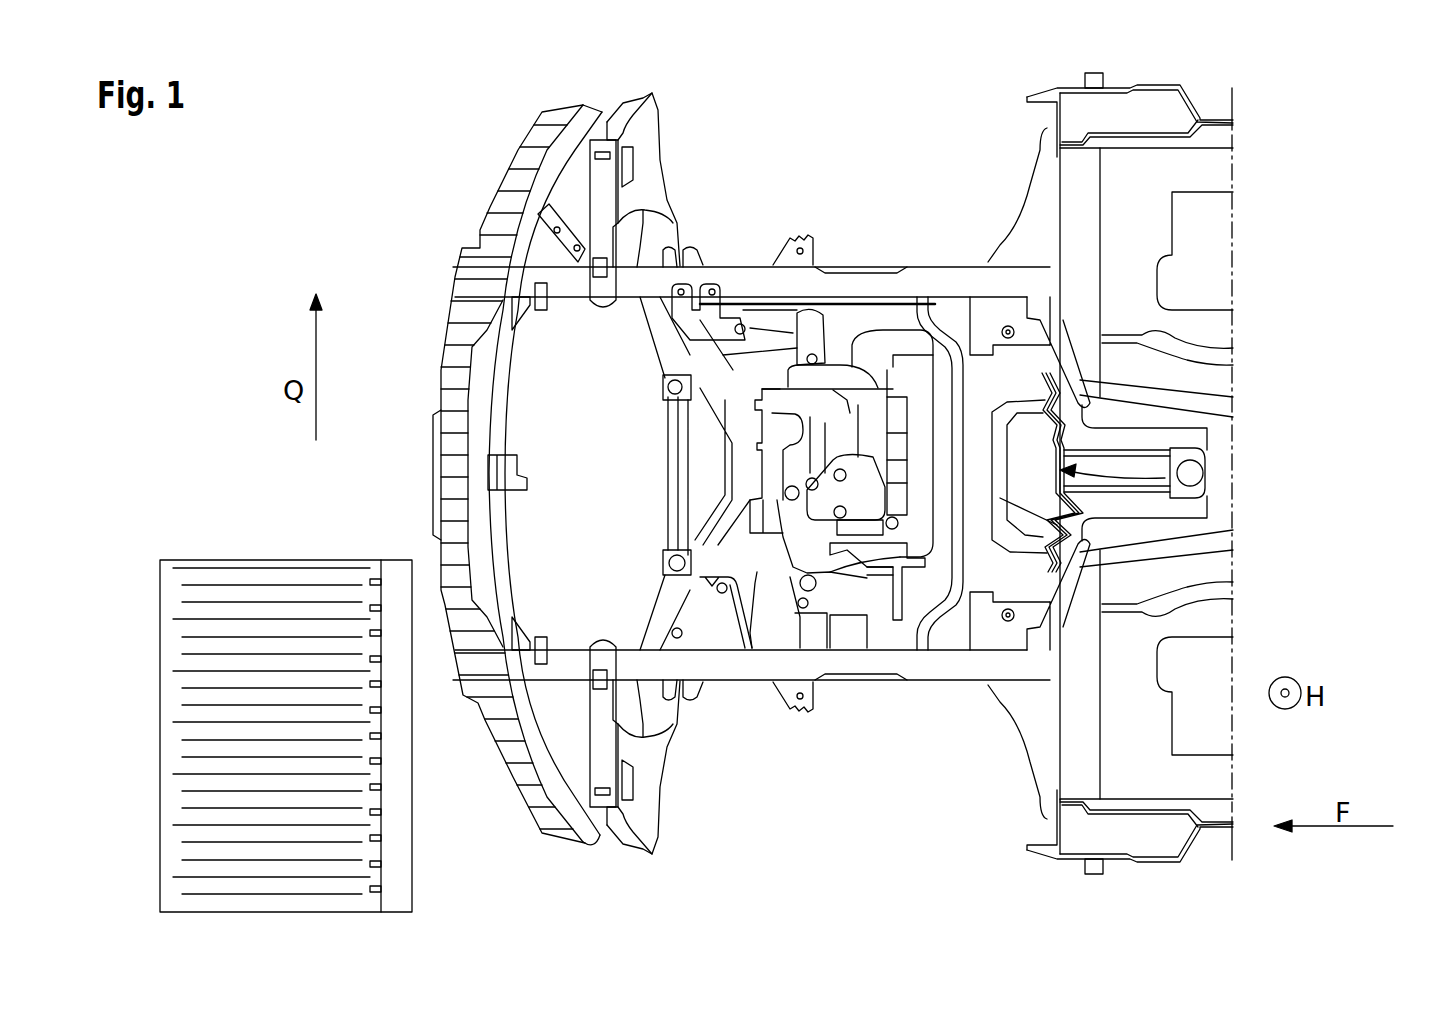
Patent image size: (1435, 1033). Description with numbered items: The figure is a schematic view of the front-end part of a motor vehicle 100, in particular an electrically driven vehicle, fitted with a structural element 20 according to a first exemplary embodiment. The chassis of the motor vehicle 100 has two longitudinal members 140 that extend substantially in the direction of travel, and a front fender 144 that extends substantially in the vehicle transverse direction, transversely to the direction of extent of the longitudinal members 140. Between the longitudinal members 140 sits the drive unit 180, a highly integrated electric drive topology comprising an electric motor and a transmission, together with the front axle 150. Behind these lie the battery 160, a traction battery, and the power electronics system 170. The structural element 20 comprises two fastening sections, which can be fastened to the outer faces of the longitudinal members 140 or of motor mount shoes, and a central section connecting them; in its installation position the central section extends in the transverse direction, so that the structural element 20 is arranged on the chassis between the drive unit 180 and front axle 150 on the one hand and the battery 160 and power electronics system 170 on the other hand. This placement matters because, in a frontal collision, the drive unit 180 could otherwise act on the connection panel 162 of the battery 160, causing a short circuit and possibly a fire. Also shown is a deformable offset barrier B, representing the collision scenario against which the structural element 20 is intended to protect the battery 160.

The motor vehicle 100 is at (530, 124).
The front fender 144 is at (464, 274).
The longitudinal member 140 is at (917, 283).
The drive unit 180 is at (841, 440).
The structural element 20 is at (968, 396).
The power electronics system 170 is at (1031, 467).
The battery 160 is at (1200, 470).
The connection panel 162 is at (1000, 498).
The front axle 150 is at (877, 624).
The deformable offset barrier B is at (201, 849).